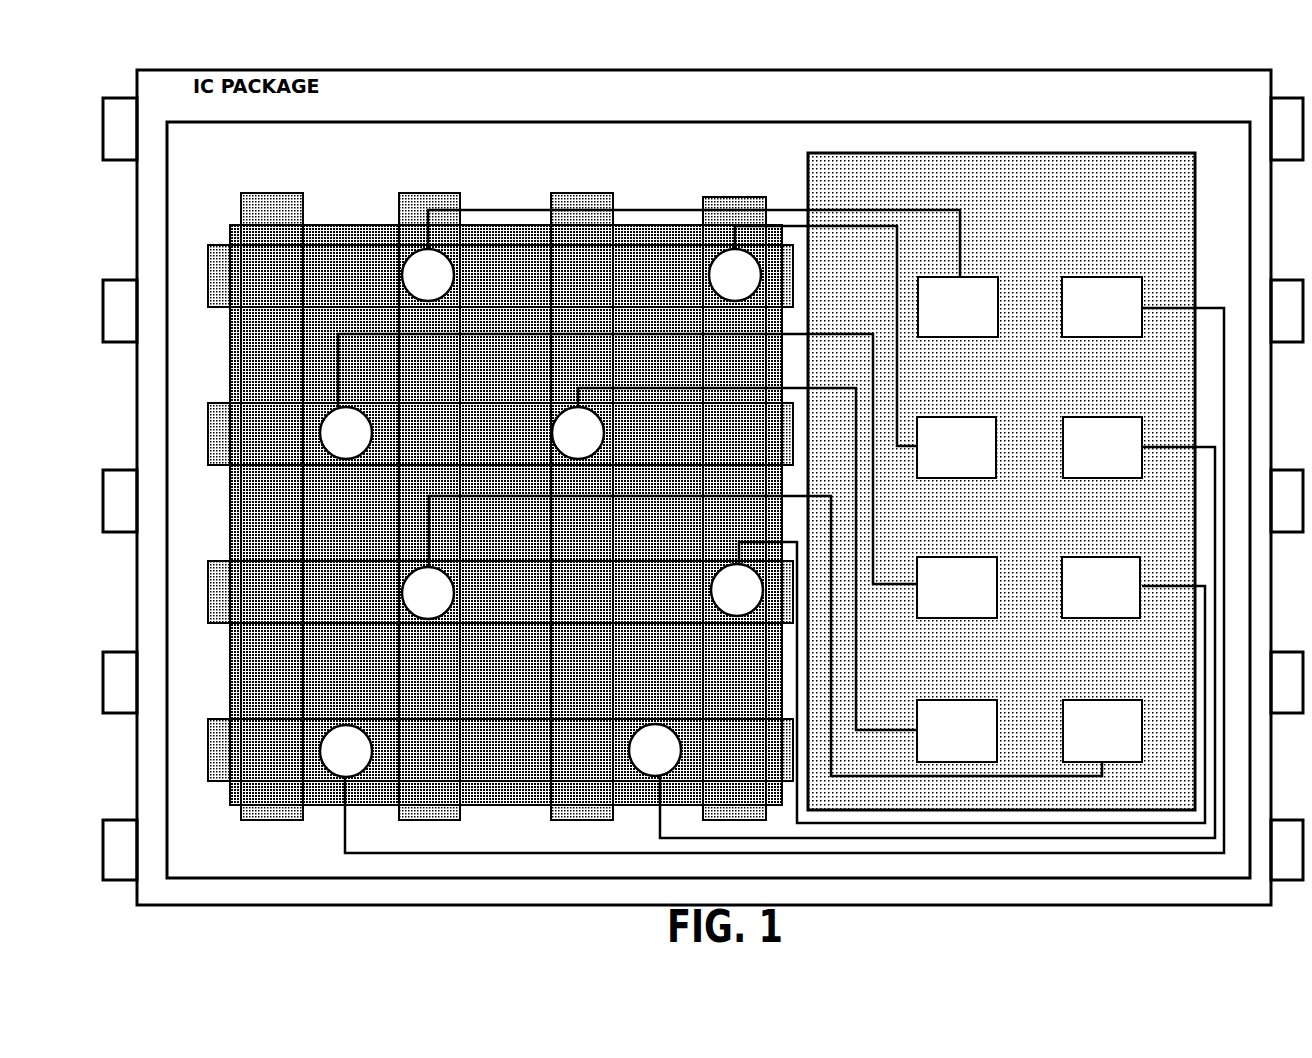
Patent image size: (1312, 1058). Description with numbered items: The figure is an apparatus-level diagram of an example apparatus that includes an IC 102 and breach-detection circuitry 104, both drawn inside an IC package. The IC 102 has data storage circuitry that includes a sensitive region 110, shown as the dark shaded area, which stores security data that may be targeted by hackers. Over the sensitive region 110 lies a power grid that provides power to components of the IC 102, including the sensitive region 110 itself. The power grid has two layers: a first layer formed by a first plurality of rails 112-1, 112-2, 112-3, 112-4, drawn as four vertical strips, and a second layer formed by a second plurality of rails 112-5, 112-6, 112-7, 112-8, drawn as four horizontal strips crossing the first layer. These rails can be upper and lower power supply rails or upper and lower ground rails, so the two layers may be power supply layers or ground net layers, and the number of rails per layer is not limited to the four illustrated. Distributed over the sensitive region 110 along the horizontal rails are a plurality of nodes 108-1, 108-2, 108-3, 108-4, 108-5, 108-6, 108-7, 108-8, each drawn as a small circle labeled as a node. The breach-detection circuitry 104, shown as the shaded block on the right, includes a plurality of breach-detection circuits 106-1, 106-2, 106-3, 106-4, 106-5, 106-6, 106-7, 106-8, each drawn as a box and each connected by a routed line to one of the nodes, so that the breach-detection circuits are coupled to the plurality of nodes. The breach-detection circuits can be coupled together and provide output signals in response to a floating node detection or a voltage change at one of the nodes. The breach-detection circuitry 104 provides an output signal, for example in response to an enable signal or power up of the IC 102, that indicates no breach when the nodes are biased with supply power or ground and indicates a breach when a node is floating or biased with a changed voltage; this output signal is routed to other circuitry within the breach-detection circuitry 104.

The IC 102 is at (708, 500).
The breach-detection circuitry 104 is at (1001, 481).
The breach-detection circuit 106-1 is at (978, 277).
The breach-detection circuit 106-2 is at (960, 417).
The breach-detection circuit 106-3 is at (948, 557).
The breach-detection circuit 106-4 is at (962, 700).
The breach-detection circuit 106-5 is at (1077, 277).
The breach-detection circuit 106-6 is at (1078, 417).
The breach-detection circuit 106-7 is at (1088, 557).
The breach-detection circuit 106-8 is at (1088, 700).
The node 108-1 is at (454, 280).
The node 108-2 is at (709, 275).
The node 108-3 is at (356, 458).
The node 108-4 is at (604, 435).
The node 108-5 is at (410, 600).
The node 108-6 is at (722, 597).
The node 108-7 is at (336, 770).
The node 108-8 is at (650, 772).
The sensitive region 110 is at (333, 225).
The rail 112-1 is at (278, 193).
The rail 112-2 is at (430, 193).
The rail 112-3 is at (580, 193).
The rail 112-4 is at (720, 197).
The rail 112-5 is at (232, 285).
The rail 112-6 is at (226, 440).
The rail 112-7 is at (232, 597).
The rail 112-8 is at (225, 745).